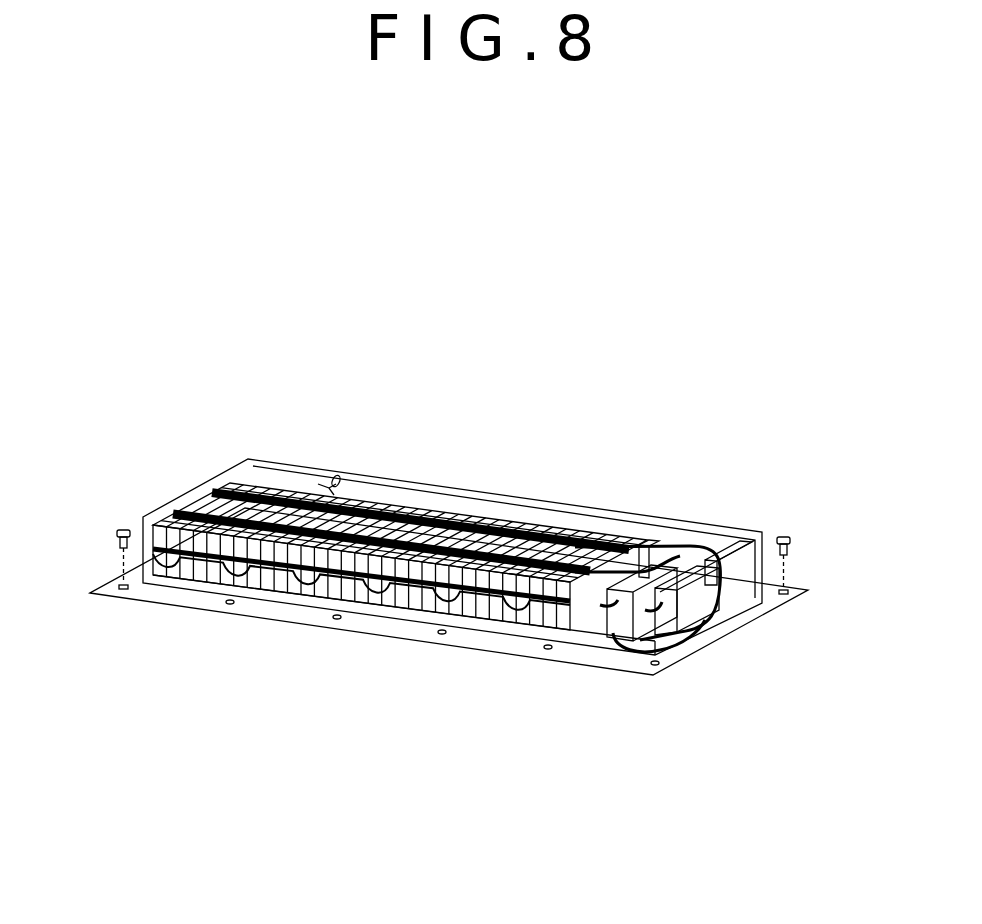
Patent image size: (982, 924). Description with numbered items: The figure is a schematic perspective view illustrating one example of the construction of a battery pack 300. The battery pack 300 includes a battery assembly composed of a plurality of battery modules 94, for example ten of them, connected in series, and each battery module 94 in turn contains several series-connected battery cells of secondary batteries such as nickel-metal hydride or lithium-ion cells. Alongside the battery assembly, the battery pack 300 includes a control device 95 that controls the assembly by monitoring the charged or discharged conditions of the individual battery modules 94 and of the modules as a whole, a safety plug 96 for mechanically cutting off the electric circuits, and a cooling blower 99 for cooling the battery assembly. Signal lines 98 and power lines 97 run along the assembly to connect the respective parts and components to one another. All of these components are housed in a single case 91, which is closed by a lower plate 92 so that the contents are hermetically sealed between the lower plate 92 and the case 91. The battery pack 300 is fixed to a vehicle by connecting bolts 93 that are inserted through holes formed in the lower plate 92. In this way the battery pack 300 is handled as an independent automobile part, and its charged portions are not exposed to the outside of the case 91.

The battery pack 300 is at (687, 262).
The case 91 is at (205, 484).
The lower plate 92 is at (467, 650).
The connecting bolts 93 is at (123, 530).
The battery modules 94 is at (293, 580).
The control device 95 is at (640, 575).
The safety plug 96 is at (731, 543).
The power lines 97 is at (723, 612).
The signal lines 98 is at (468, 515).
The cooling blower 99 is at (317, 482).